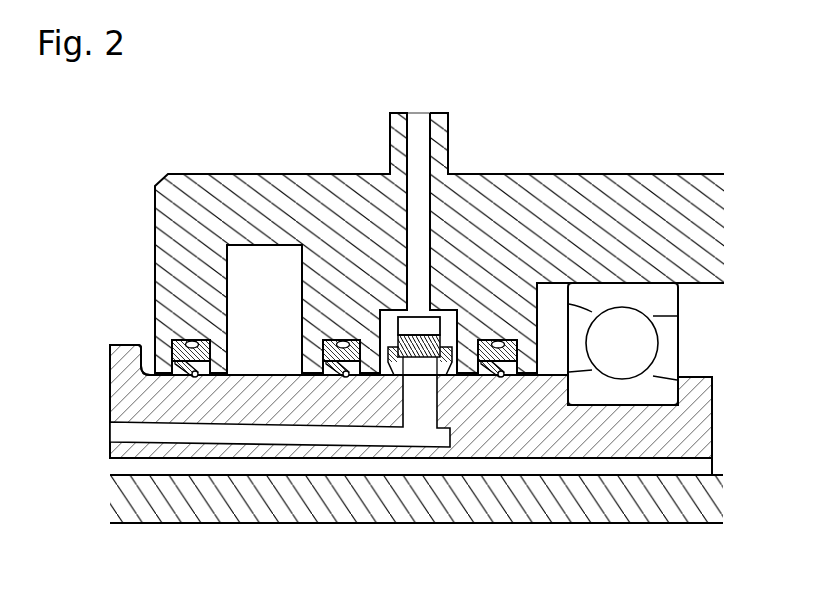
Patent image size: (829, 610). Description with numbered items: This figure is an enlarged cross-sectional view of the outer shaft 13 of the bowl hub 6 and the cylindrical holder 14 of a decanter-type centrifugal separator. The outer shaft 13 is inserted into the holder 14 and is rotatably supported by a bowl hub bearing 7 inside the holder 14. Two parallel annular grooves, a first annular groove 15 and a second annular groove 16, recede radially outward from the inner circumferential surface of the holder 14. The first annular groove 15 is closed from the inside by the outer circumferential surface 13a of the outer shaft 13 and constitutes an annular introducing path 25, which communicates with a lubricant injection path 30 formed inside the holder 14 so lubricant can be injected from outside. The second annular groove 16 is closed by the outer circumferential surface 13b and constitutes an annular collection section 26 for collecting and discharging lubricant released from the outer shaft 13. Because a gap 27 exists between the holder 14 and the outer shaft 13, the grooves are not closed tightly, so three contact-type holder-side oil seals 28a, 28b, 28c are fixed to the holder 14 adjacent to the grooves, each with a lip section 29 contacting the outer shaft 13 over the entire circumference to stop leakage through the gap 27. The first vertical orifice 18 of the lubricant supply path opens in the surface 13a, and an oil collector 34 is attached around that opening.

The bowl hub 6 is at (127, 345).
The bowl hub bearing 7 is at (653, 345).
The outer shaft 13 is at (712, 423).
The outer circumferential surface 13a is at (410, 372).
The outer circumferential surface 13b is at (243, 375).
The holder 14 is at (682, 172).
The first annular groove 15 is at (505, 322).
The second annular groove 16 is at (301, 285).
The first vertical orifice 18 is at (412, 410).
The annular introducing path 25 is at (448, 330).
The annular collection section 26 is at (250, 268).
The gap 27 is at (315, 376).
The holder-side oil seal 28a is at (498, 338).
The holder-side oil seal 28b is at (342, 338).
The holder-side oil seal 28c is at (192, 336).
The lip section 29 is at (197, 377).
The lubricant injection path 30 is at (417, 148).
The oil collector 34 is at (425, 356).